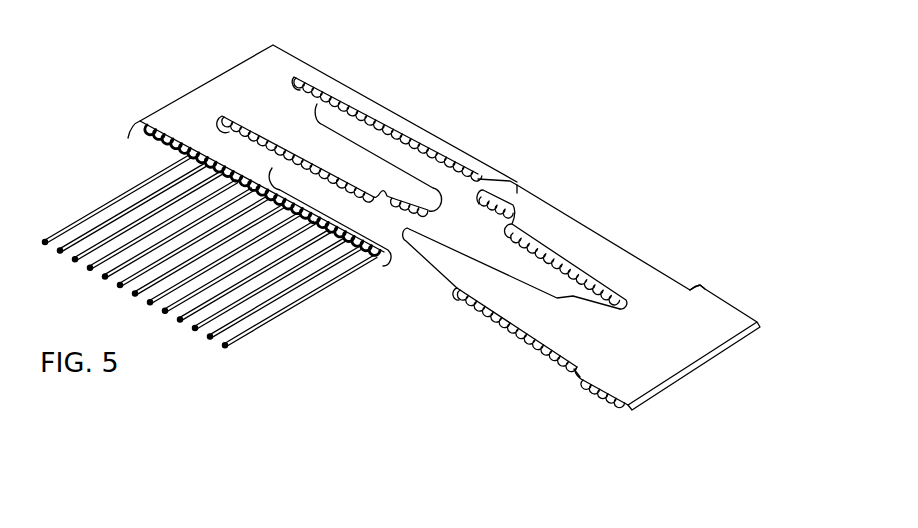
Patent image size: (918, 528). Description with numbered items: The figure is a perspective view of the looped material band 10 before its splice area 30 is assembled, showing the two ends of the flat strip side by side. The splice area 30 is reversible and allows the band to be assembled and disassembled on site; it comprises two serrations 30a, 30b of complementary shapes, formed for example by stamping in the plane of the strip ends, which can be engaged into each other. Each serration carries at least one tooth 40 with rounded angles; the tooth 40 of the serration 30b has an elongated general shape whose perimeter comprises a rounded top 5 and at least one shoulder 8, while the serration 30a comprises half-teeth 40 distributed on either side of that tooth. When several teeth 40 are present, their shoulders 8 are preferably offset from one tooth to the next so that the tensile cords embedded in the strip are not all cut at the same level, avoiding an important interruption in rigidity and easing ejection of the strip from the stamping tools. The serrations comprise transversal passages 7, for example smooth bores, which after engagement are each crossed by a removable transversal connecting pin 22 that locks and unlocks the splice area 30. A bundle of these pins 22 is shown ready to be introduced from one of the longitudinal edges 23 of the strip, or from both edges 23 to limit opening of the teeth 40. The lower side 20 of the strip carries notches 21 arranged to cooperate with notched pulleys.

The looped material band 10 is at (147, 68).
The splice area 30 is at (557, 101).
The serration 30a is at (467, 141).
The serration 30b is at (623, 275).
The shoulder 8 is at (343, 160).
The tooth 40 is at (383, 163).
The transversal passage 7 is at (198, 160).
The rounded top 5 is at (483, 179).
The lower side 20 is at (577, 378).
The notches 21 is at (600, 392).
The transversal connecting pin 22 is at (98, 213).
The longitudinal edge 23 is at (728, 302).